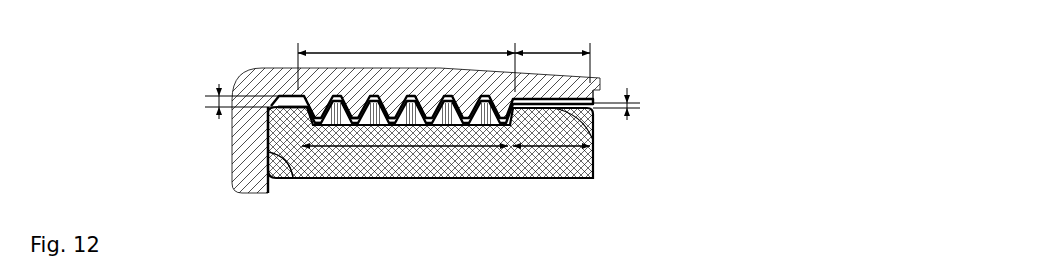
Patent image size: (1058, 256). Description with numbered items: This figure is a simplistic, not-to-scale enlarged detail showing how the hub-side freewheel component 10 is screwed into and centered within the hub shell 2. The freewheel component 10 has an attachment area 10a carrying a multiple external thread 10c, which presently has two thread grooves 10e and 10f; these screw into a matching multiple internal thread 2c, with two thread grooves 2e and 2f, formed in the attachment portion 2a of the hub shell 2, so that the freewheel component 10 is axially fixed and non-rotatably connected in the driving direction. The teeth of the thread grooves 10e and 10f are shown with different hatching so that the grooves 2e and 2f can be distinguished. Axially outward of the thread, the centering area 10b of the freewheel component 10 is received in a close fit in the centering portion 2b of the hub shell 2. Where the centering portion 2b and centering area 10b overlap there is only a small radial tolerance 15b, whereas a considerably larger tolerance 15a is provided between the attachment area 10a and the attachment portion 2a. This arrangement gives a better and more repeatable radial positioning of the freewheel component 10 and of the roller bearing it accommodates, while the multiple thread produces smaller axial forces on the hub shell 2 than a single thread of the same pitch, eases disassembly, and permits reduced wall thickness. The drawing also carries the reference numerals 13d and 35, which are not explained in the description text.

The hub shell 2 is at (565, 98).
The attachment portion 2a is at (433, 53).
The centering portion 2b is at (598, 87).
The internal thread 2c is at (392, 120).
The thread groove 2e is at (355, 100).
The thread groove 2f is at (388, 100).
The hub-side freewheel component 10 is at (582, 167).
The attachment area 10a is at (453, 148).
The centering area 10b is at (590, 137).
The multiple external thread 10c is at (370, 112).
The thread groove 10e is at (302, 110).
The thread groove 10f is at (327, 110).
The fillet edge 13d is at (285, 153).
The tolerance 15a is at (212, 101).
The radial tolerance 15b is at (640, 105).
The mold 35 is at (266, 167).